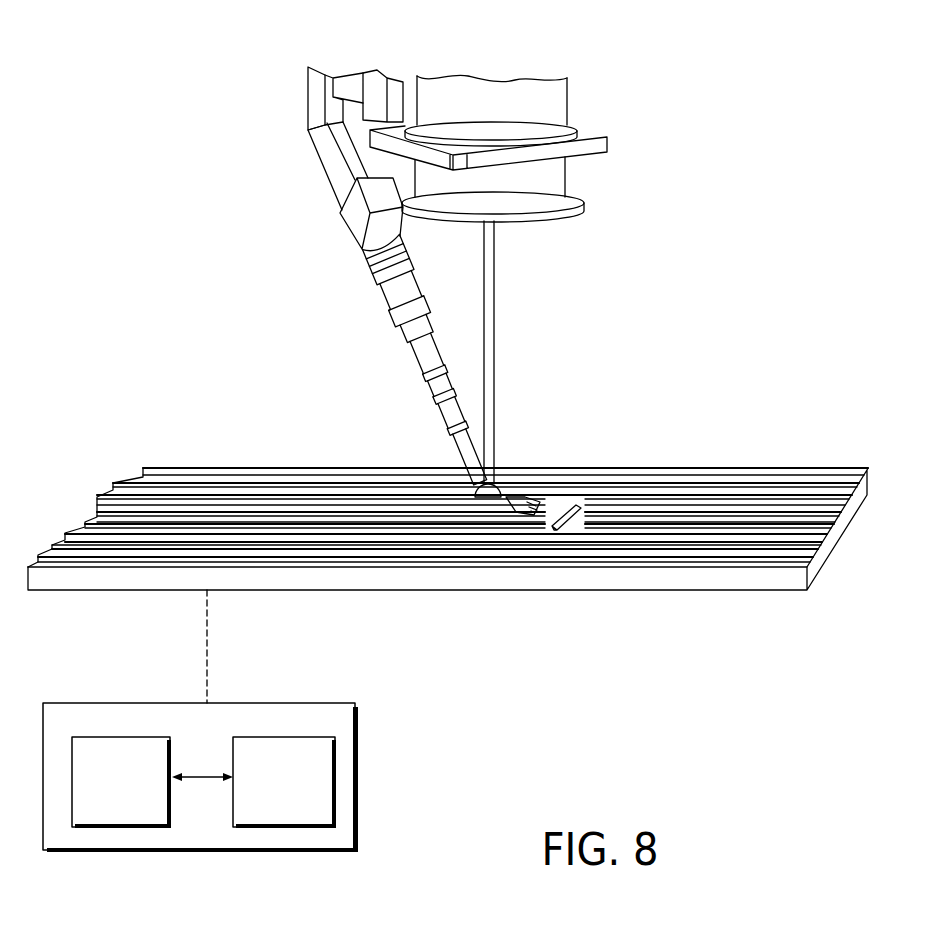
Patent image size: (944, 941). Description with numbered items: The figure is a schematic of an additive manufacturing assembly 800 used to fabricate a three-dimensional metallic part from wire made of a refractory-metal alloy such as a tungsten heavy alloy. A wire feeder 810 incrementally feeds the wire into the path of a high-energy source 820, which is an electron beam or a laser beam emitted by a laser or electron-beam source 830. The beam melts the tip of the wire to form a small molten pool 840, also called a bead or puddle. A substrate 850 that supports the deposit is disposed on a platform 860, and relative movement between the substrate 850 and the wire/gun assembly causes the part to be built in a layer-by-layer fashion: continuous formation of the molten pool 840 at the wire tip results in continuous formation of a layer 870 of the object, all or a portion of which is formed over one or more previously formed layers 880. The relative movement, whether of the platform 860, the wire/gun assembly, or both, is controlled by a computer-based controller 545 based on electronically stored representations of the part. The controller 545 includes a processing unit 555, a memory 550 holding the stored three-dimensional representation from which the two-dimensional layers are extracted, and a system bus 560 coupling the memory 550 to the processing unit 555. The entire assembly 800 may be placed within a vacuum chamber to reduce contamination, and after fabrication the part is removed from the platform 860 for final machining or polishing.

The additive manufacturing assembly 800 is at (214, 180).
The wire feeder 810 is at (380, 289).
The high-energy source 820 is at (497, 291).
The laser or electron-beam source 830 is at (509, 93).
The molten pool 840 is at (460, 482).
The substrate 850 is at (559, 504).
The platform 860 is at (770, 470).
The layer 870 is at (283, 487).
The previously formed layers 880 is at (522, 492).
The computer-based controller 545 is at (360, 782).
The memory 550 is at (103, 792).
The processing unit 555 is at (265, 803).
The system bus 560 is at (197, 772).